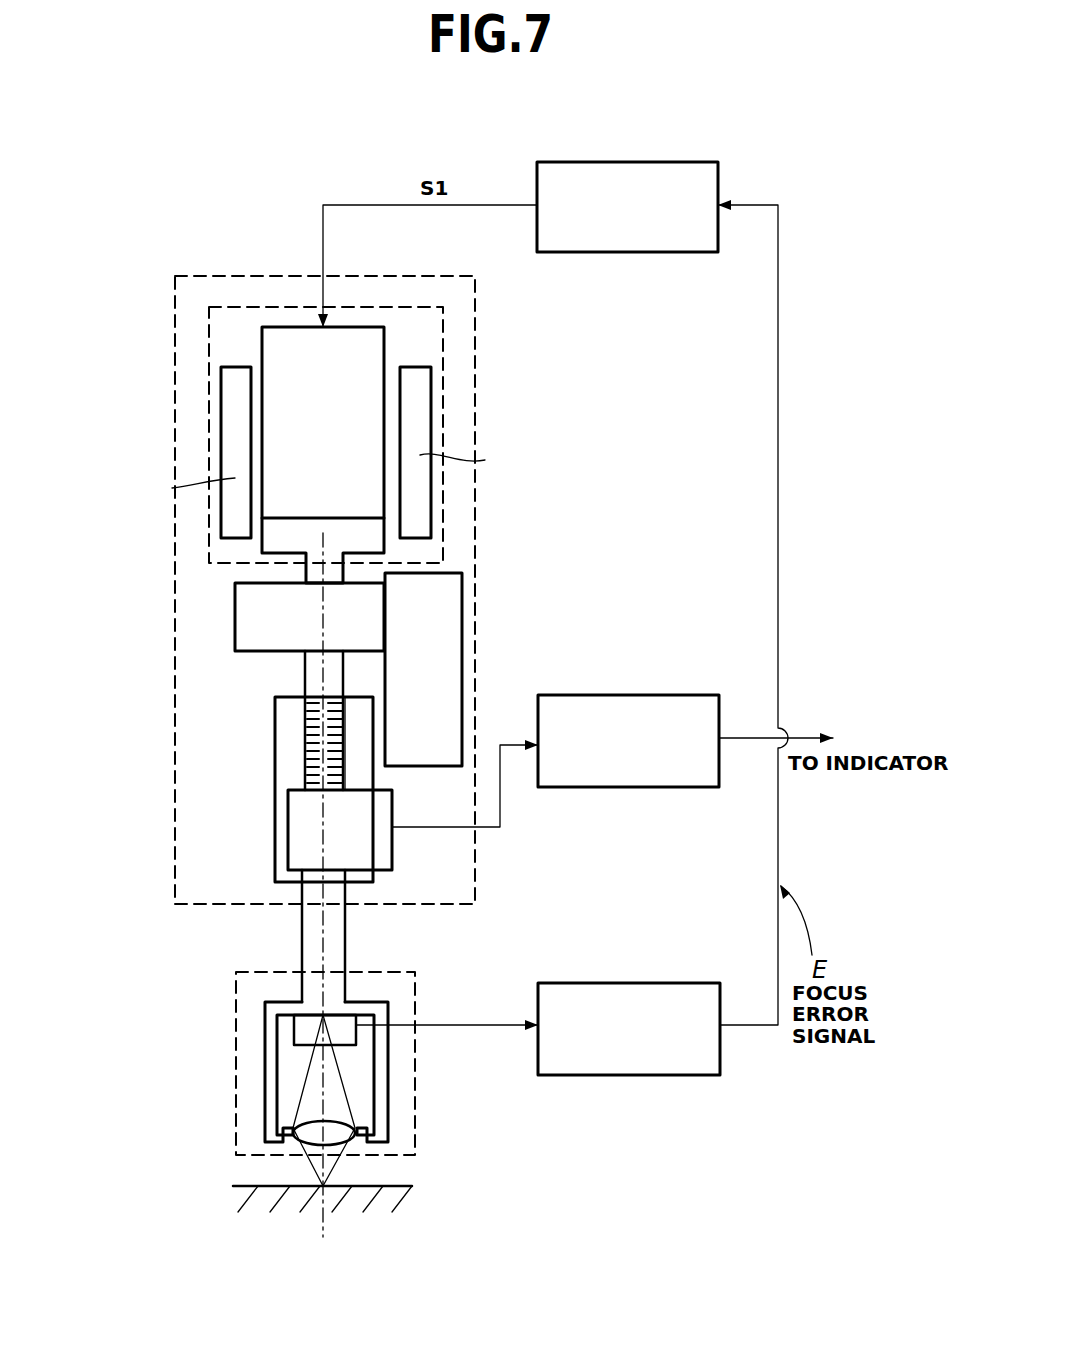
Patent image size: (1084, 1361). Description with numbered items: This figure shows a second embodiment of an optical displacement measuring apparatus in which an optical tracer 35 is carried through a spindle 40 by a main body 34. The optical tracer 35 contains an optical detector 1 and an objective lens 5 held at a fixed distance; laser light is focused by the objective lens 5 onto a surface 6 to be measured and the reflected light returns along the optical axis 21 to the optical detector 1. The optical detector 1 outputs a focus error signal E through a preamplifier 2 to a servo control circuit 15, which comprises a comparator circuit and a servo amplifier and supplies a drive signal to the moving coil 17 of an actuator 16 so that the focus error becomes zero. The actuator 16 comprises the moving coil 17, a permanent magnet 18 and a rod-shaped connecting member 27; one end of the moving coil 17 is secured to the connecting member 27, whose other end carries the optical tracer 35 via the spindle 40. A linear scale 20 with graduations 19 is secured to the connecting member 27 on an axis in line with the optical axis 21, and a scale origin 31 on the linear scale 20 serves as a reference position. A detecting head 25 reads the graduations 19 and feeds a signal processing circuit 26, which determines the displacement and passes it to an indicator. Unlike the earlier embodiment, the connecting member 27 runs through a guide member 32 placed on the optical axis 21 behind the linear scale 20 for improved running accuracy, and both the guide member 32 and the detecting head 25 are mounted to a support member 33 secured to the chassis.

The optical detector 1 is at (356, 1019).
The preamplifier 2 is at (668, 983).
The objective lens 5 is at (365, 1115).
The surface to be measured 6 is at (375, 1186).
The servo control circuit 15 is at (650, 162).
The actuator 16 is at (275, 305).
The moving coil 17 is at (376, 327).
The permanent magnet 18 is at (221, 445).
The graduations 19 is at (307, 720).
The linear scale 20 is at (365, 775).
The optical axis 21 is at (327, 1062).
The detecting head 25 is at (392, 845).
The signal processing circuit 26 is at (670, 695).
The connecting member 27 is at (305, 672).
The scale origin 31 is at (290, 770).
The guide member 32 is at (235, 600).
The support member 33 is at (462, 573).
The main body 34 is at (175, 375).
The optical tracer 35 is at (235, 1080).
The spindle 40 is at (302, 940).